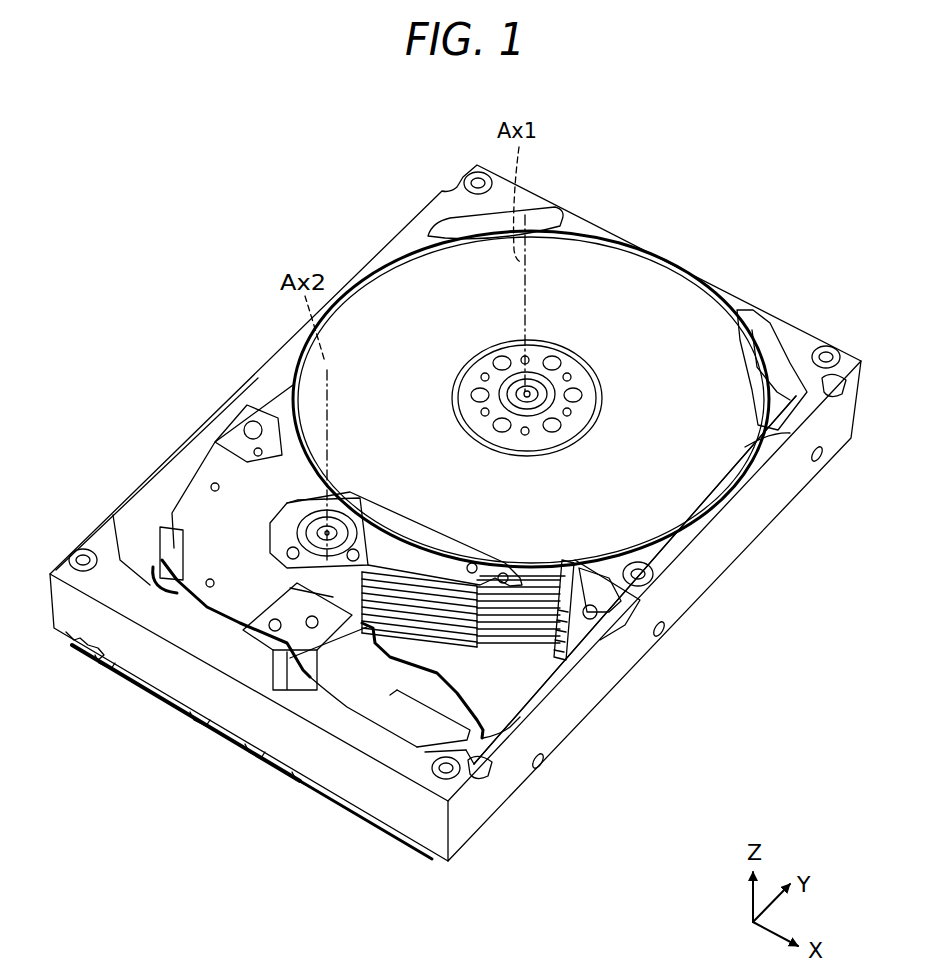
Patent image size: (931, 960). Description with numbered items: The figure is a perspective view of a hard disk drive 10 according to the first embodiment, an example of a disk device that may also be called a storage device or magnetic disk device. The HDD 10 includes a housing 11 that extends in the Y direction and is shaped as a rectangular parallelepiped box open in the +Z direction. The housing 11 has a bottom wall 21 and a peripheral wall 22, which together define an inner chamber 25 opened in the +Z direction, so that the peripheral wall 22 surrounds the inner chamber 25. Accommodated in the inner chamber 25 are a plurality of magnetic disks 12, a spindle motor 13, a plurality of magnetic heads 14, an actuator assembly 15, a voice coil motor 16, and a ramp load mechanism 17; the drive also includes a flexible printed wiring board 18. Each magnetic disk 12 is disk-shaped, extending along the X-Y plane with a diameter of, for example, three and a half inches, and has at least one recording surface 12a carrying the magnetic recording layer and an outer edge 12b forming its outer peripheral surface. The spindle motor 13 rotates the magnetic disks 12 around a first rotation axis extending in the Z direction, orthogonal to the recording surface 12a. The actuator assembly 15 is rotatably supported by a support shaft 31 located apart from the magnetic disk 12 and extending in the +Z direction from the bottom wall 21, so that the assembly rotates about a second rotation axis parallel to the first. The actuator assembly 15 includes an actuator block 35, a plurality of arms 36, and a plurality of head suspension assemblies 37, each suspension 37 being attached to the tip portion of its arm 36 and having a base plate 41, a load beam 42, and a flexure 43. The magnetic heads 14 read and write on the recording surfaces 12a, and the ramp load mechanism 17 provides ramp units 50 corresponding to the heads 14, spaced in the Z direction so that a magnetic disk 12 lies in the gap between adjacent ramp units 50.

The hard disk drive (HDD) 10 is at (204, 154).
The housing 11 is at (723, 559).
The magnetic disk 12 is at (413, 285).
The recording surface 12a is at (531, 400).
The outer edge 12b is at (762, 438).
The spindle motor 13 is at (530, 390).
The magnetic head 14 is at (566, 560).
The actuator assembly 15 is at (441, 532).
The voice coil motor (VCM) 16 is at (236, 471).
The ramp load mechanism 17 is at (632, 612).
The flexible printed wiring board (FPC) 18 is at (373, 633).
The bottom wall 21 is at (531, 660).
The peripheral wall 22 is at (682, 595).
The inner chamber 25 is at (501, 709).
The support shaft 31 is at (334, 520).
The actuator block 35 is at (307, 517).
The arm 36 is at (395, 537).
The head suspension assembly 37 is at (515, 567).
The base plate 41 is at (503, 568).
The load beam 42 is at (538, 575).
The flexure 43 is at (345, 583).
The ramp unit 50 is at (579, 545).